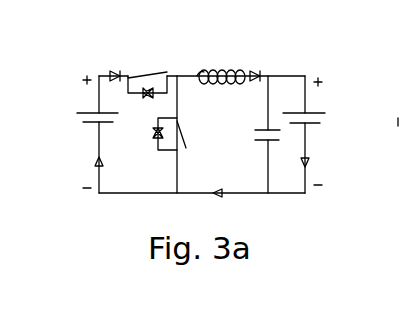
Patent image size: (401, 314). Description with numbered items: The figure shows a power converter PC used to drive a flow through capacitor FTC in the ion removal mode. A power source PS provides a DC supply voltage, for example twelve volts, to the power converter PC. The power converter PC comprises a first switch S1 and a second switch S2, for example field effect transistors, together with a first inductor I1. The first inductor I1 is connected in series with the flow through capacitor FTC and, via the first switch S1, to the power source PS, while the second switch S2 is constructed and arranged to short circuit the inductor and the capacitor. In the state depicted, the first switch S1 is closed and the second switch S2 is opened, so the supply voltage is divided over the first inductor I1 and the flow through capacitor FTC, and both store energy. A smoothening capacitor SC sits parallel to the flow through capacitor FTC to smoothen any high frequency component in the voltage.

The power source PS is at (78, 117).
The first switch S1 is at (128, 61).
The second switch S2 is at (182, 127).
The first inductor I1 is at (223, 68).
The smoothening capacitor SC is at (270, 108).
The flow through capacitor FTC is at (321, 134).
The power converter PC is at (116, 205).